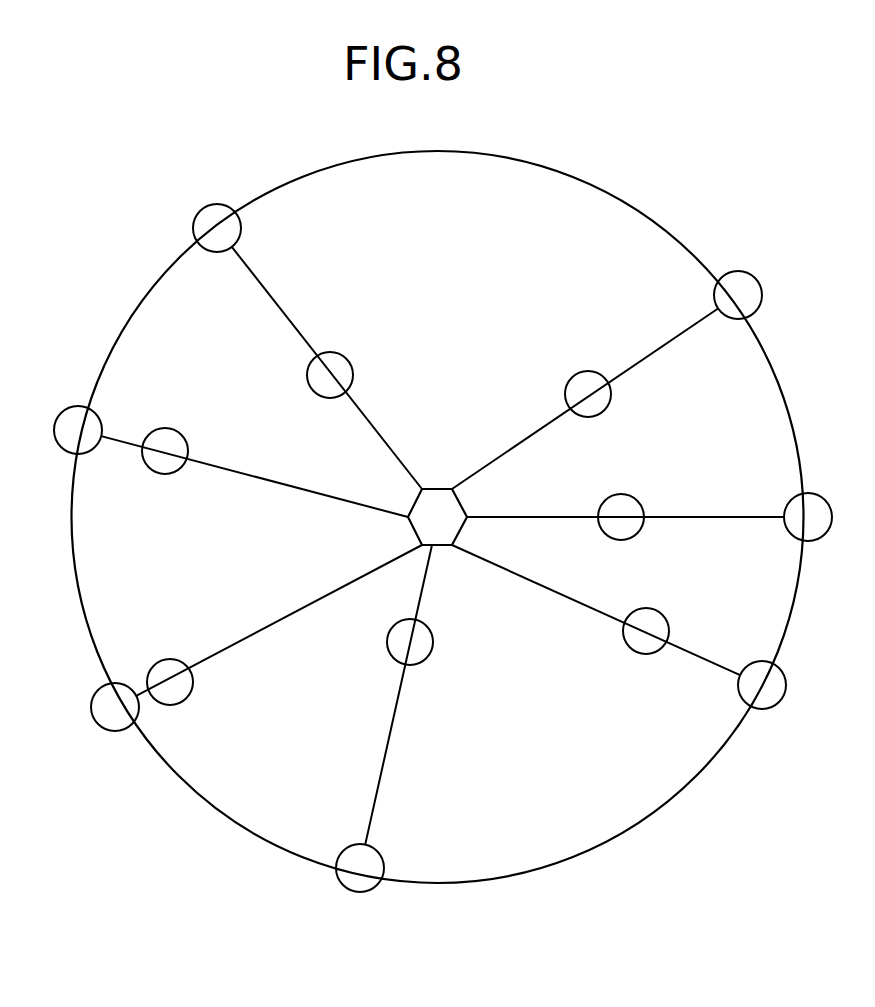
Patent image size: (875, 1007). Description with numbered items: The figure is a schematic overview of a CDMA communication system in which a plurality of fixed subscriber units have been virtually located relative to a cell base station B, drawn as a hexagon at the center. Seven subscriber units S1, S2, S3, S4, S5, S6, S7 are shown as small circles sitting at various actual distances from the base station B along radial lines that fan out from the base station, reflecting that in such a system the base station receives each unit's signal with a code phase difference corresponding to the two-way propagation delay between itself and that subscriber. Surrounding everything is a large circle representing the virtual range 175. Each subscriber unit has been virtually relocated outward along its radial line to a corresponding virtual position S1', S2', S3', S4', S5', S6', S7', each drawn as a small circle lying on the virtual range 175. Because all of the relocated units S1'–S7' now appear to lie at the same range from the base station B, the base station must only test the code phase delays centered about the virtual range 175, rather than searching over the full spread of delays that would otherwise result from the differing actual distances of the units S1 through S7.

The virtual range 175 is at (698, 257).
The cell base station B is at (443, 488).
The subscriber unit S1 is at (644, 509).
The virtually relocated subscriber unit S1' is at (828, 523).
The subscriber unit S2 is at (588, 376).
The virtually relocated subscriber unit S2' is at (770, 295).
The subscriber unit S3 is at (354, 375).
The virtually relocated subscriber unit S3' is at (216, 213).
The subscriber unit S4 is at (190, 449).
The virtually relocated subscriber unit S4' is at (76, 416).
The subscriber unit S5 is at (170, 669).
The virtually relocated subscriber unit S5' is at (89, 707).
The subscriber unit S6 is at (431, 642).
The virtually relocated subscriber unit S6' is at (381, 879).
The subscriber unit S7 is at (643, 647).
The virtually relocated subscriber unit S7' is at (782, 697).